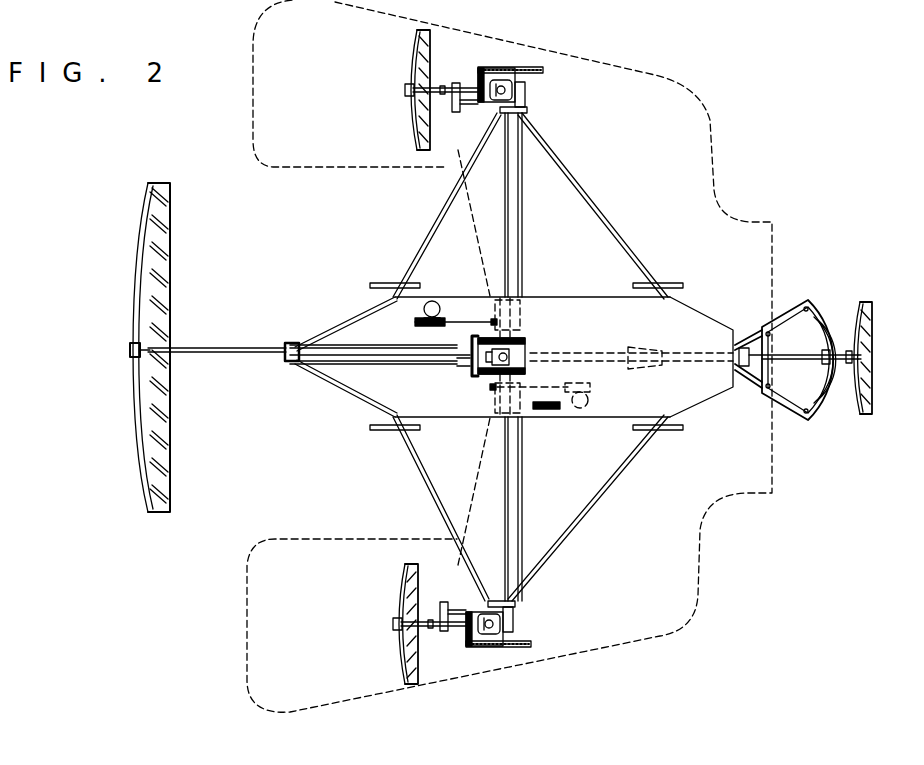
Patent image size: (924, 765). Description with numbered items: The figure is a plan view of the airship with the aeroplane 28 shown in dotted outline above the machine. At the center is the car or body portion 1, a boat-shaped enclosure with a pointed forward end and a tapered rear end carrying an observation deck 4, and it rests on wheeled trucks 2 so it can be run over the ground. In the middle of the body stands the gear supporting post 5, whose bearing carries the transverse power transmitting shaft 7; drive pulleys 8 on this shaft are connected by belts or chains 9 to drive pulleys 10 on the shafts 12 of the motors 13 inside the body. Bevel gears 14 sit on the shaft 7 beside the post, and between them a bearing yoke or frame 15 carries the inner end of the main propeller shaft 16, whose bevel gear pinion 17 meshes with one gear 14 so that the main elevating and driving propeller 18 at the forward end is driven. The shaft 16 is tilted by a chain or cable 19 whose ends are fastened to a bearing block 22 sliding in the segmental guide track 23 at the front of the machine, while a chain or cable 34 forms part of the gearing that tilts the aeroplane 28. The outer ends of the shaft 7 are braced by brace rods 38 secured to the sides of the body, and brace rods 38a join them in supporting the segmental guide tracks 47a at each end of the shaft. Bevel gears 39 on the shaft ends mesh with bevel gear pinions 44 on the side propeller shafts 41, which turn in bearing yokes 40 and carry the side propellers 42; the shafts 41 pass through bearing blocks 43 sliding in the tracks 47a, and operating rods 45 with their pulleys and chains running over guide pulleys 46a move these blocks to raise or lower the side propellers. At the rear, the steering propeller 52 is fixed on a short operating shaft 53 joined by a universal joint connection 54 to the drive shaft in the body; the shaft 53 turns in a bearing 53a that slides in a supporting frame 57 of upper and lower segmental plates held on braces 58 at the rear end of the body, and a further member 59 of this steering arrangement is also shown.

The car or body portion 1 is at (563, 299).
The wheeled trucks 2 is at (380, 283).
The observation deck 4 is at (705, 321).
The gear supporting post 5 is at (540, 356).
The power transmitting shaft 7 is at (505, 160).
The drive pulleys 8 is at (520, 322).
The belts or chains 9 is at (461, 320).
The drive pulleys 10 is at (412, 322).
The motor shafts 12 is at (428, 324).
The motors 13 is at (433, 300).
The bevel gears 14 is at (525, 342).
The bearing yoke or frame 15 is at (462, 366).
The main propeller shaft 16 is at (210, 349).
The bevel gear pinion 17 is at (440, 364).
The main elevating and driving propeller 18 is at (146, 330).
The chain or cable 19 is at (336, 377).
The bearing block 22 is at (285, 362).
The segmental guide track 23 is at (356, 346).
The aeroplane 28 is at (262, 80).
The chain or cable 34 is at (544, 410).
The brace rods 38 is at (600, 230).
The brace rods 38a is at (422, 487).
The bevel gears 39 is at (545, 70).
The bearing yokes 40 is at (504, 84).
The side propeller shafts 41 is at (440, 86).
The side propellers 42 is at (415, 50).
The bearing blocks 43 is at (455, 98).
The bevel gear pinions 44 is at (480, 66).
The operating rods 45 is at (521, 248).
The guide pulleys 46a is at (528, 94).
The segmental guide tracks 47a is at (470, 590).
The steering propeller 52 is at (873, 318).
The short operating shaft 53 is at (775, 357).
The bearing 53a is at (816, 402).
The universal joint connection 54 is at (745, 386).
The supporting frame 57 is at (790, 300).
The braces 58 is at (741, 335).
The rudder frame inner member 59 is at (824, 312).